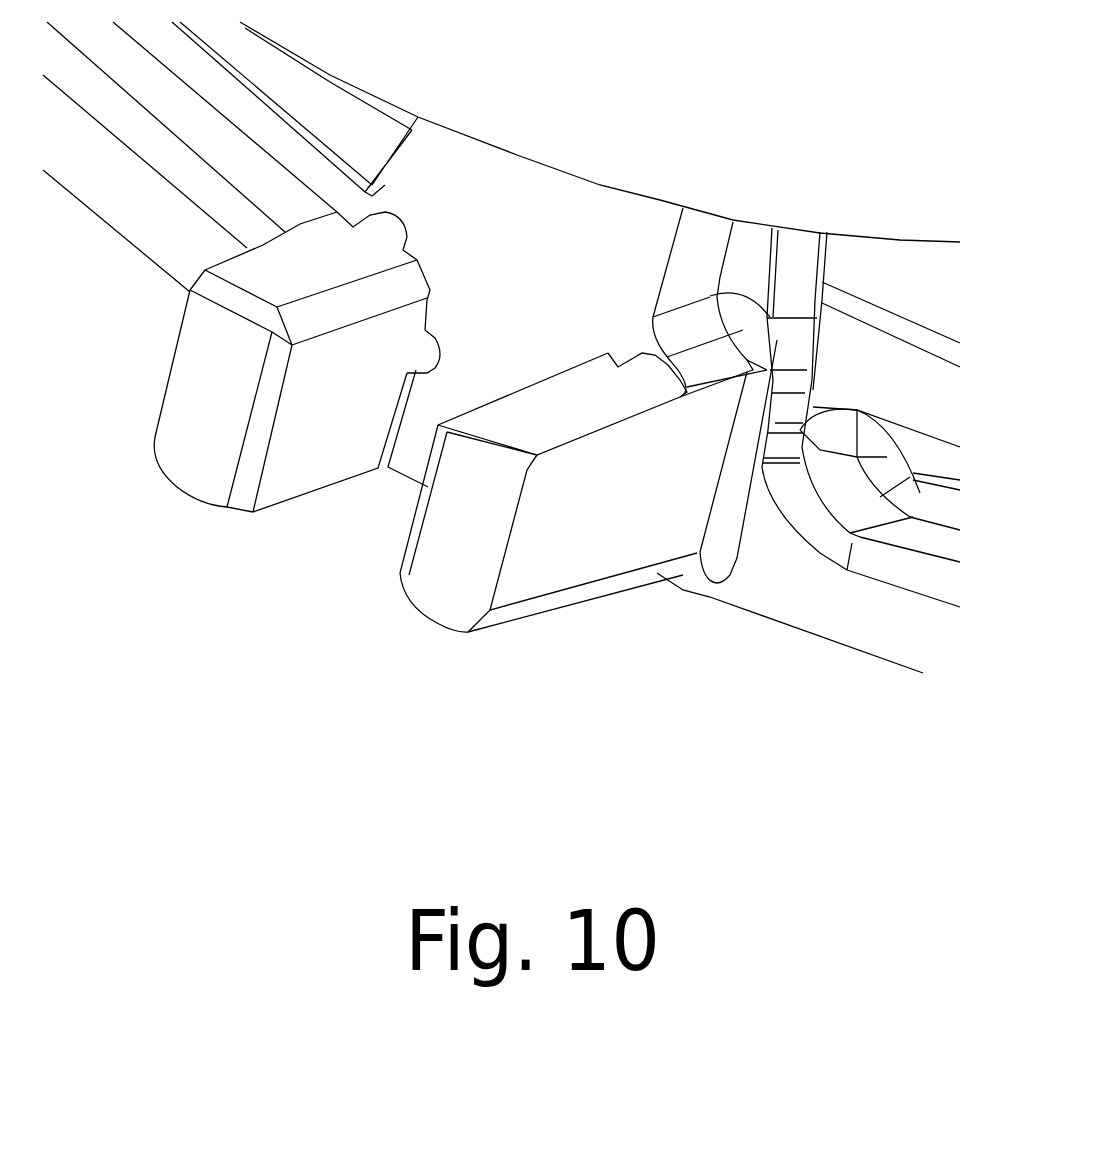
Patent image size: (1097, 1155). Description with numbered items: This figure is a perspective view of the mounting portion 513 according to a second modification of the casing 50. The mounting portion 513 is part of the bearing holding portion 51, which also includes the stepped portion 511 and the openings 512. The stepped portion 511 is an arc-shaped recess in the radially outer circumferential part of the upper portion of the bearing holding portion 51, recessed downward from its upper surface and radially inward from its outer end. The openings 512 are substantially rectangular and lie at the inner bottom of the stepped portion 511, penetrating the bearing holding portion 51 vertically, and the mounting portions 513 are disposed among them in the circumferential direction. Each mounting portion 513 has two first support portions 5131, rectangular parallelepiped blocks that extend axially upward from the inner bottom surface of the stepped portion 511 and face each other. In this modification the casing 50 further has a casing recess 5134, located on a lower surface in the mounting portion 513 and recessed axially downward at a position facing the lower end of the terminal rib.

The casing 50 is at (881, 93).
The bearing holding portion 51 is at (113, 230).
The stepped portion 511 is at (886, 262).
The opening 512 is at (850, 530).
The mounting portion 513 is at (414, 367).
The first support portion 5131 is at (150, 455).
The casing recess 5134 is at (443, 357).